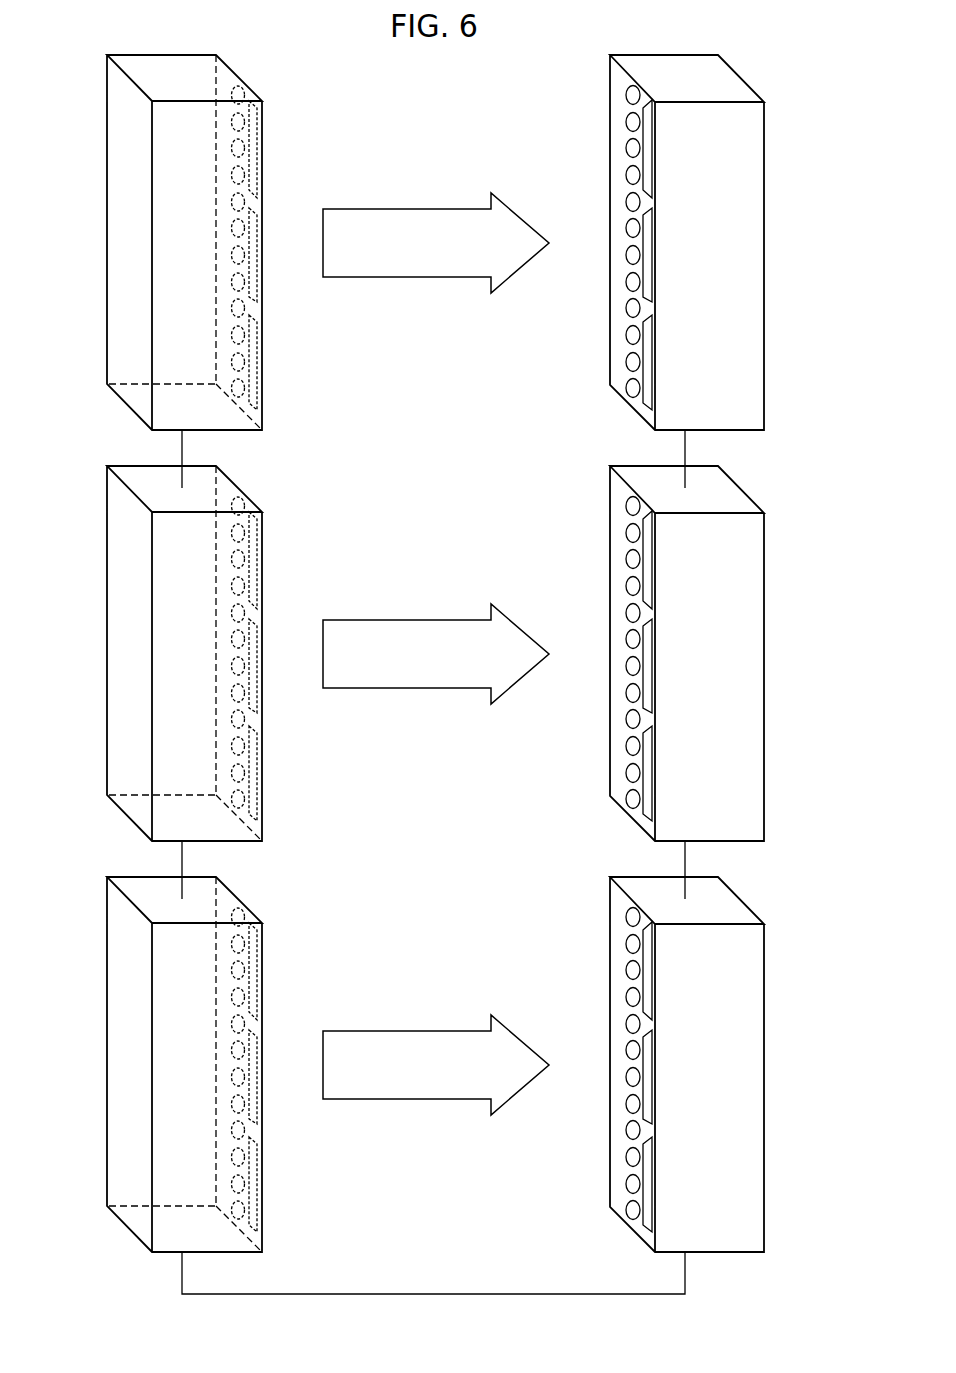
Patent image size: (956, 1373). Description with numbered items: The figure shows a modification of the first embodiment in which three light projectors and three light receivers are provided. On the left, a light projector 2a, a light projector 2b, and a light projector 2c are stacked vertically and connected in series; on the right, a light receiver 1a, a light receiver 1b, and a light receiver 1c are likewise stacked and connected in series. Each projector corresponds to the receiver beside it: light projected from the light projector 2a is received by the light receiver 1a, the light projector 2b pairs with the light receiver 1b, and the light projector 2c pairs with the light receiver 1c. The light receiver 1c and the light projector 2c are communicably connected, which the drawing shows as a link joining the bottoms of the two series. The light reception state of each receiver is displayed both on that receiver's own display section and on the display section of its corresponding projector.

The light projector 2a is at (107, 207).
The light projector 2b is at (160, 653).
The light projector 2c is at (160, 1064).
The light receiver 1a is at (764, 205).
The light receiver 1b is at (710, 653).
The light receiver 1c is at (710, 1064).